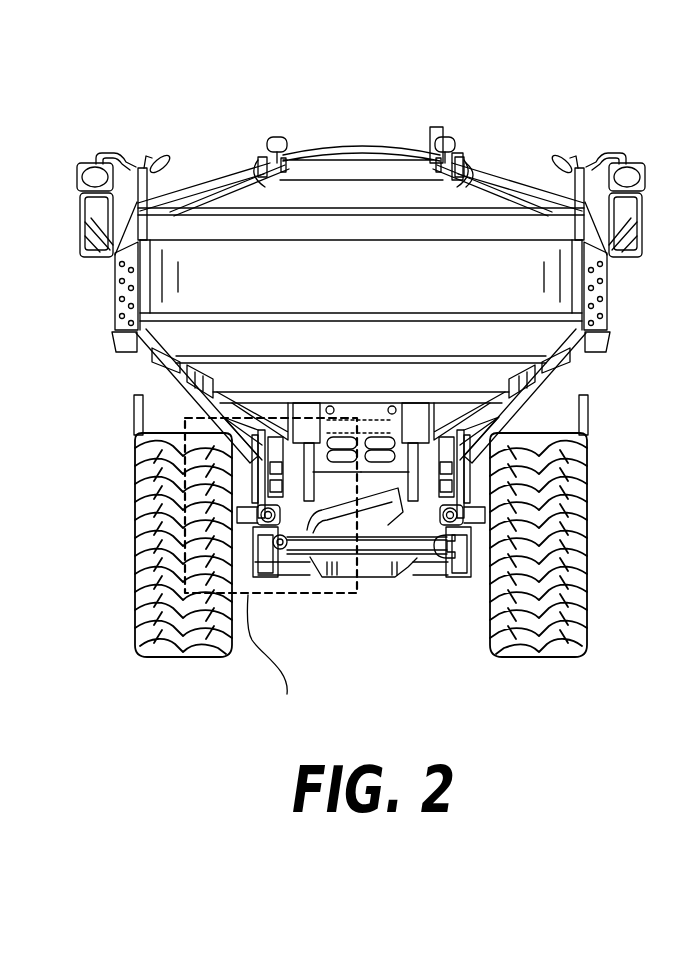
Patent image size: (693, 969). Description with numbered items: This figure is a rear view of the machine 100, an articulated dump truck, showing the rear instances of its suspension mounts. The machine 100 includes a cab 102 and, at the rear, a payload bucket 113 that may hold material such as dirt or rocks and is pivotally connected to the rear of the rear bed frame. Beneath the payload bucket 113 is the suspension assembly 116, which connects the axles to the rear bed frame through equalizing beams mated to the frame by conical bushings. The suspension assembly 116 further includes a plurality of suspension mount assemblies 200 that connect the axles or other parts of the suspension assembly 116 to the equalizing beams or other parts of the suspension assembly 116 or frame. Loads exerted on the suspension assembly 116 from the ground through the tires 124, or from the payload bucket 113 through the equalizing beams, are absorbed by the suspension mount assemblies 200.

The machine 100 is at (380, 366).
The cab 102 is at (361, 301).
The payload bucket 113 is at (345, 208).
The suspension assembly 116 is at (370, 588).
The tires 124 is at (201, 637).
The suspension mount assembly 200 is at (268, 523).